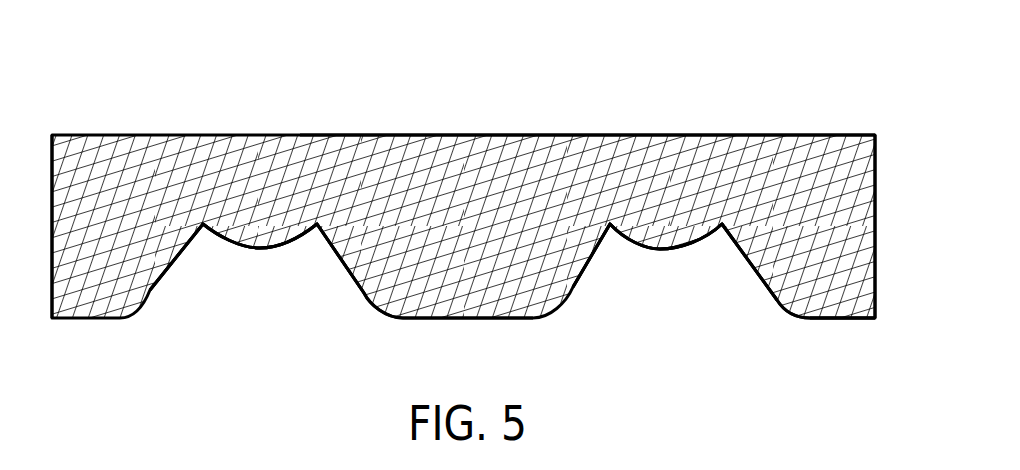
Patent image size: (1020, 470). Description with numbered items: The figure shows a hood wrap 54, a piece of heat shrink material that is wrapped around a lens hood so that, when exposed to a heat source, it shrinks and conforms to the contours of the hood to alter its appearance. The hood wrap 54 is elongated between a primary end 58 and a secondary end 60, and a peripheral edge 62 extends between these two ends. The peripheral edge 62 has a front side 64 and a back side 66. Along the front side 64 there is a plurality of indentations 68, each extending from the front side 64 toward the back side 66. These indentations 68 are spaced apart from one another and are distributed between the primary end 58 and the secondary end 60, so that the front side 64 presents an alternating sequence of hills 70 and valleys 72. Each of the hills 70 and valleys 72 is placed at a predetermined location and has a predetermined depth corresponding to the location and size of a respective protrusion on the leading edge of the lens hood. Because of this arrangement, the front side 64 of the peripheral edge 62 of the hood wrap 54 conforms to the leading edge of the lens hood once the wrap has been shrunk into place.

The hood wrap 54 is at (463, 182).
The primary end 58 is at (52, 228).
The secondary end 60 is at (875, 228).
The peripheral edge 62 is at (652, 135).
The front side 64 is at (841, 318).
The back side 66 is at (780, 135).
The indentations 68 is at (315, 227).
The hills 70 is at (260, 249).
The valleys 72 is at (200, 232).